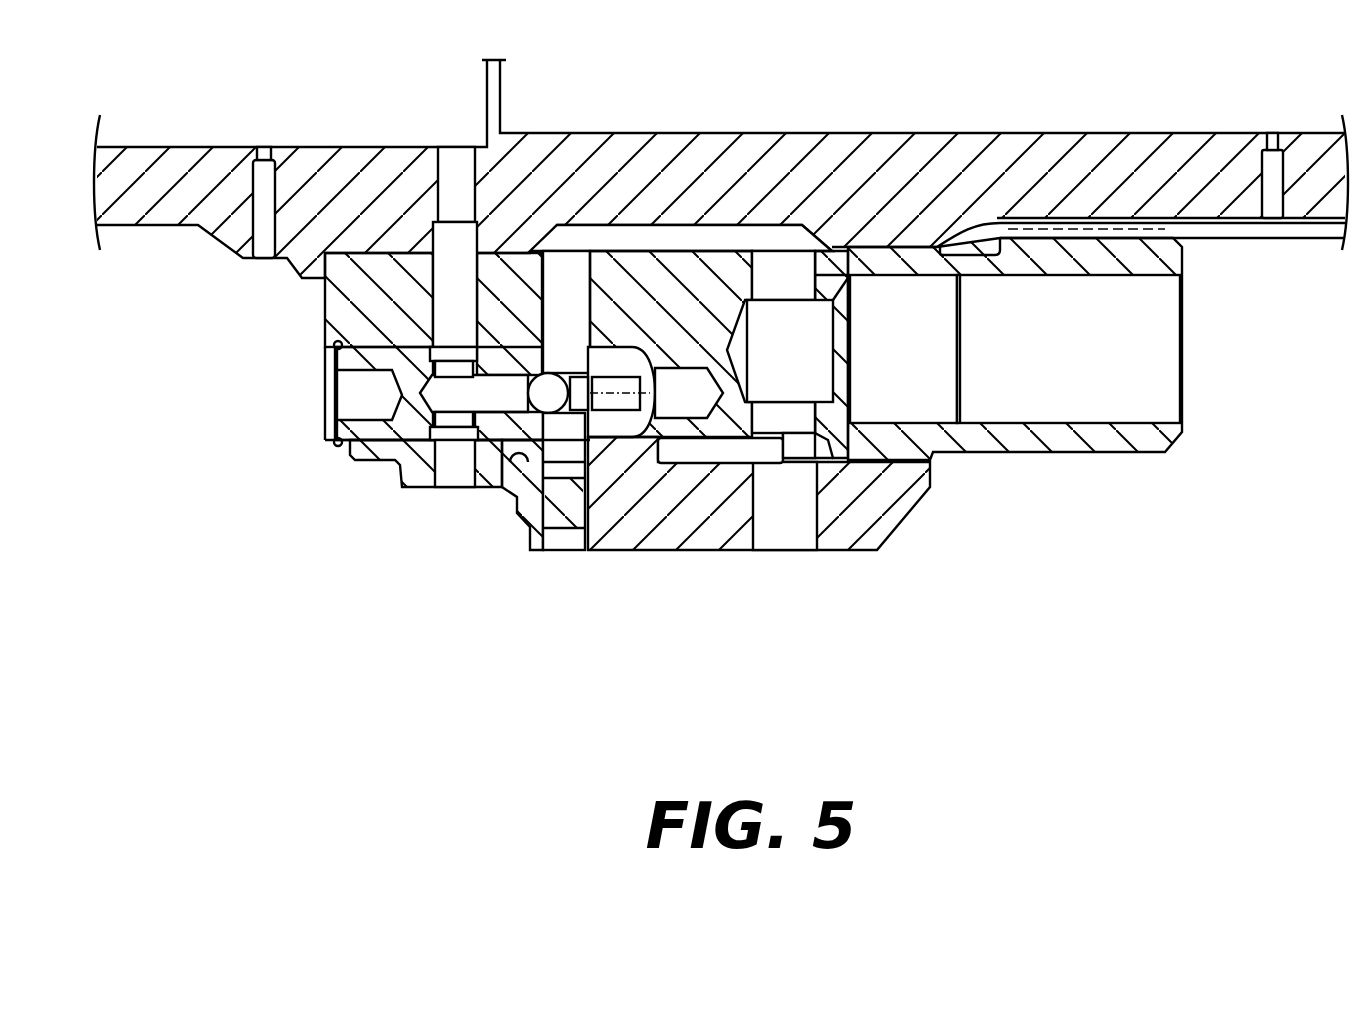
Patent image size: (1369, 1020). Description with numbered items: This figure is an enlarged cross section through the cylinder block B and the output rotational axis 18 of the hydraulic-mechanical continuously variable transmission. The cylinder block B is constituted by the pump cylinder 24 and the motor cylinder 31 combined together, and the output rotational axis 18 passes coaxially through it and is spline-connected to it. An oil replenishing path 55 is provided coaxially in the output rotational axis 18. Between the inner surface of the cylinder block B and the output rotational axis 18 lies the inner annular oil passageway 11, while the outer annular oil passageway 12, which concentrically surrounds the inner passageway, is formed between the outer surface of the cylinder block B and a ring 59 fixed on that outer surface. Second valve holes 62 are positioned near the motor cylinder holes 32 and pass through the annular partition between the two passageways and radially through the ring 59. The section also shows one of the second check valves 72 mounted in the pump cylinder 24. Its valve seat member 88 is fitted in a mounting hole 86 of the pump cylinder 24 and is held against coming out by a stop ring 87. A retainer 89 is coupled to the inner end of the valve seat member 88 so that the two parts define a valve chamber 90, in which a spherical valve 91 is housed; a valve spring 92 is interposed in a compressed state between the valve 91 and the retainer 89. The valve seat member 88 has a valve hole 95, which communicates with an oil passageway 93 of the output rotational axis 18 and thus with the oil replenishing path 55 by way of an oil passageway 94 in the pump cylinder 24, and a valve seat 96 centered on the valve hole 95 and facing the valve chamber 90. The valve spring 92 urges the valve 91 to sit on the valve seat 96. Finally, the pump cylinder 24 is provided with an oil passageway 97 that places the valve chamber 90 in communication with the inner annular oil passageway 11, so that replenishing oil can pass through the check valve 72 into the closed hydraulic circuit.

The inner annular oil passageway 11 is at (687, 240).
The oil replenishing path 55 is at (834, 101).
The oil passageway 93 is at (468, 177).
The oil passageway 94 is at (477, 258).
The oil passageway 97 is at (585, 270).
The second valve hole 62 is at (813, 283).
The output rotational axis 18 is at (1213, 205).
The mounting hole 86 is at (392, 346).
The valve seat member 88 is at (507, 353).
The valve seat 96 is at (548, 374).
The valve spring 92 is at (580, 372).
The retainer 89 is at (633, 360).
The valve chamber 90 is at (612, 397).
The outer annular oil passageway 12 is at (717, 450).
The ring 59 is at (680, 533).
The spherical valve 91 is at (553, 412).
The valve hole 95 is at (462, 410).
The second check valve 72 is at (492, 453).
The pump cylinder 24 is at (407, 470).
The stop ring 87 is at (338, 448).
The motor cylinder 31 is at (980, 440).
The motor cylinder hole 32 is at (1083, 415).
The cylinder block B is at (308, 323).